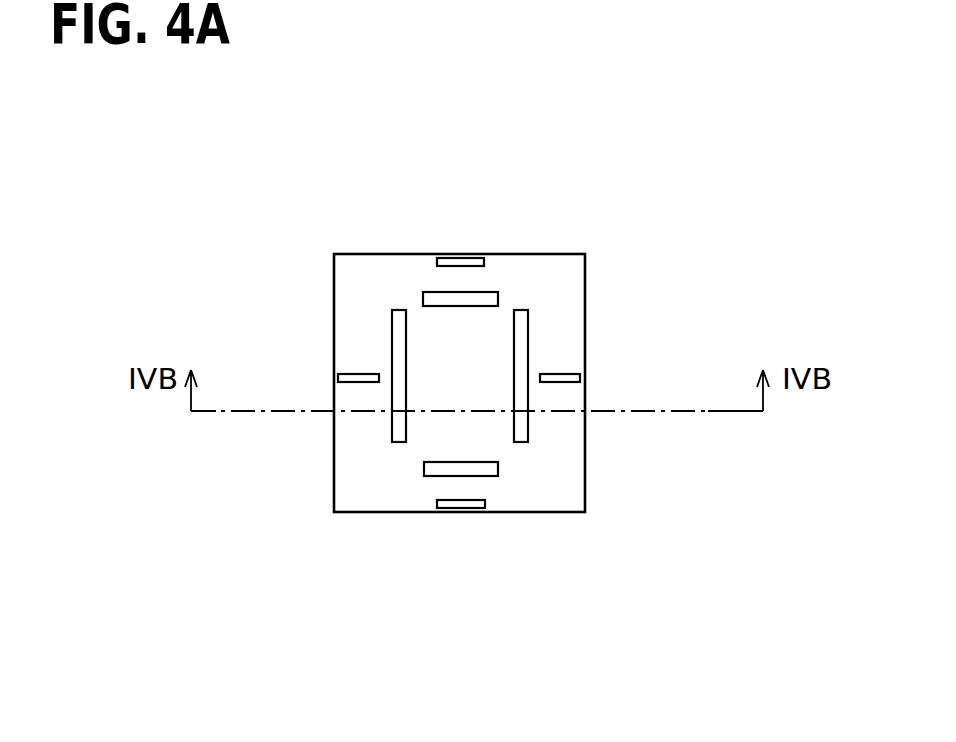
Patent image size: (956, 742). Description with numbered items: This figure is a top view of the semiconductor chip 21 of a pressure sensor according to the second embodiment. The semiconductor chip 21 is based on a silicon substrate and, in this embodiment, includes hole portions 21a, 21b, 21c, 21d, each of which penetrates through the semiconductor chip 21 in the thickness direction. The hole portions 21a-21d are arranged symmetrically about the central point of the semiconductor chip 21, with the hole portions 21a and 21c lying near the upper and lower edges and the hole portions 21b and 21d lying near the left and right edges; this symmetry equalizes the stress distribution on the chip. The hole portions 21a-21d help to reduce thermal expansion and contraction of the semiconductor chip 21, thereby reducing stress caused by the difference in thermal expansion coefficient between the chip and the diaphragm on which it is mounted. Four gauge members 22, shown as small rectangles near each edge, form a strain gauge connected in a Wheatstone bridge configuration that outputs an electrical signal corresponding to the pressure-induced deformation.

The semiconductor chip 21 is at (585, 475).
The hole portion 21a is at (438, 298).
The hole portion 21b is at (522, 333).
The hole portion 21c is at (487, 470).
The hole portion 21d is at (395, 323).
The gauge member 22 is at (470, 258).